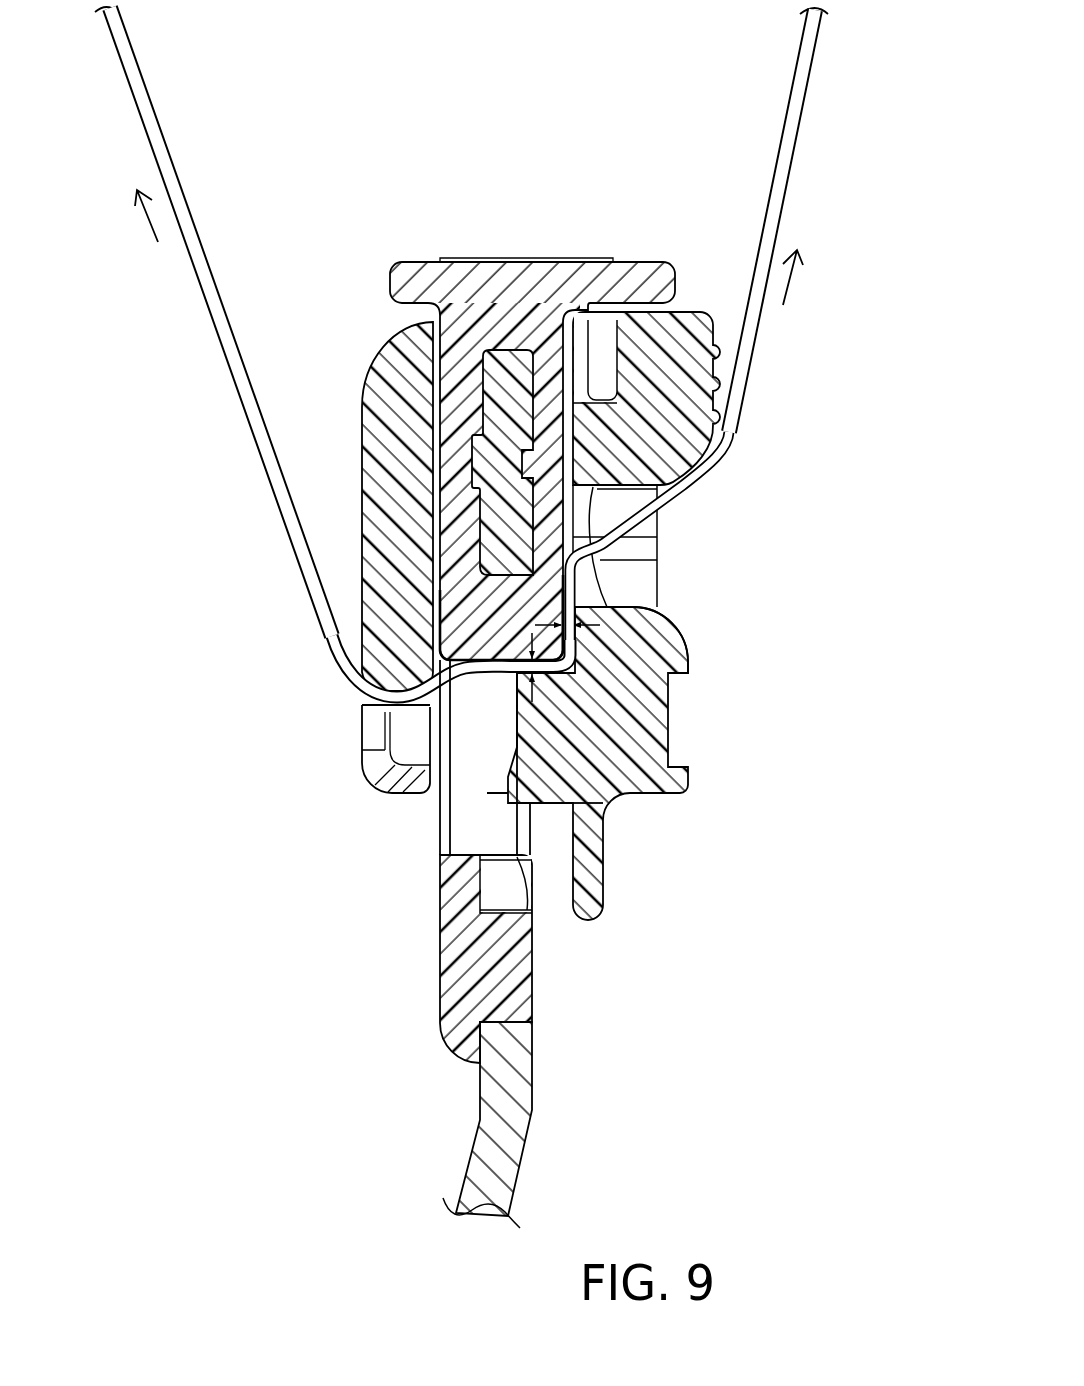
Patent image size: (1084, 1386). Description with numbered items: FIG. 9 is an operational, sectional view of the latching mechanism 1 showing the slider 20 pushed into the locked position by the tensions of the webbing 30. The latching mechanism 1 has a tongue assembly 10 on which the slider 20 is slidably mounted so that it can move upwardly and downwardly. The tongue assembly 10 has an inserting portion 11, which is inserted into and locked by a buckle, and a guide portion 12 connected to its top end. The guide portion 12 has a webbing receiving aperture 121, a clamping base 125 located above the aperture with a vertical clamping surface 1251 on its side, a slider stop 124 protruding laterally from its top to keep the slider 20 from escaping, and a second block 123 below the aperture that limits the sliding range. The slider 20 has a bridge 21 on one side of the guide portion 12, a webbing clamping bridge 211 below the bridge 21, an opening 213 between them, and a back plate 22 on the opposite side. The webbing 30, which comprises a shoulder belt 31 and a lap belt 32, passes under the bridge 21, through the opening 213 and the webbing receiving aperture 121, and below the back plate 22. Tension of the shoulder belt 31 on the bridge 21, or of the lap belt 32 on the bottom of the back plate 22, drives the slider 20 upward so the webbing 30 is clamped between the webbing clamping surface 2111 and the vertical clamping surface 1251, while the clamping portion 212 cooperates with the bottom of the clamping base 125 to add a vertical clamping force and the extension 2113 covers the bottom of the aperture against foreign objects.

The latching mechanism 1 is at (483, 705).
The tongue assembly 10 is at (450, 705).
The inserting portion 11 is at (530, 1200).
The guide portion 12 is at (450, 622).
The webbing receiving aperture 121 is at (478, 699).
The second block 123 is at (492, 912).
The slider stop 124 is at (623, 277).
The clamping base 125 is at (378, 612).
The vertical clamping surface 1251 is at (566, 600).
The slider 20 is at (527, 593).
The bridge 21 is at (642, 593).
The webbing clamping bridge 211 is at (642, 785).
The webbing clamping surface 2111 is at (575, 660).
The clamping portion 212 is at (545, 690).
The extension 2113 is at (595, 890).
The opening 213 is at (622, 573).
The back plate 22 is at (377, 562).
The webbing 30 is at (501, 352).
The shoulder belt 31 is at (786, 183).
The lap belt 32 is at (212, 308).